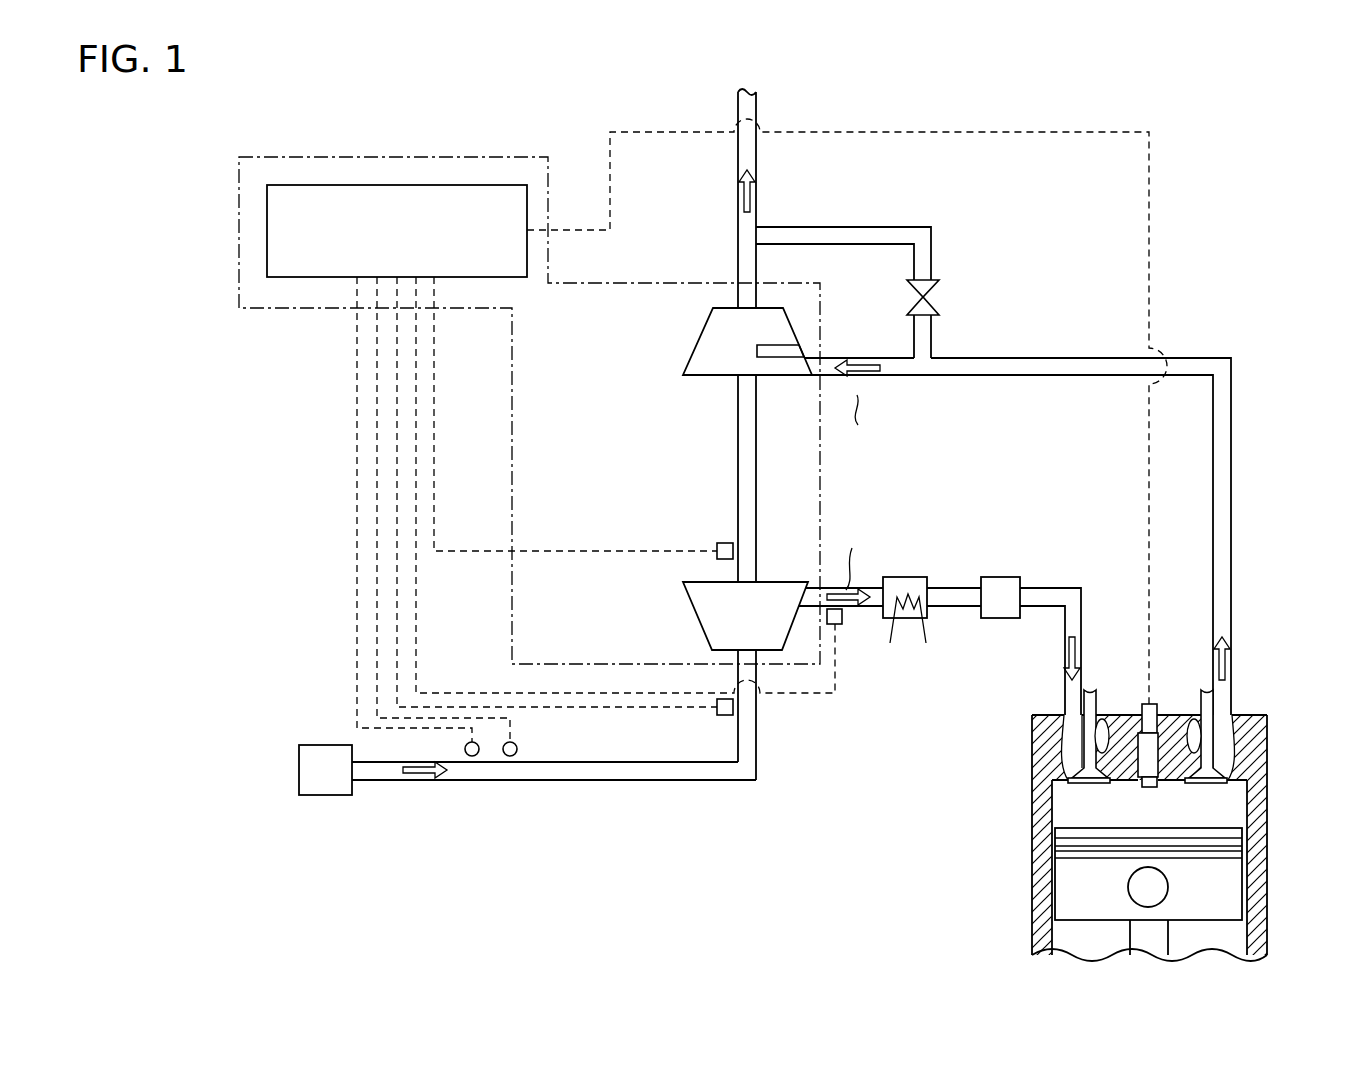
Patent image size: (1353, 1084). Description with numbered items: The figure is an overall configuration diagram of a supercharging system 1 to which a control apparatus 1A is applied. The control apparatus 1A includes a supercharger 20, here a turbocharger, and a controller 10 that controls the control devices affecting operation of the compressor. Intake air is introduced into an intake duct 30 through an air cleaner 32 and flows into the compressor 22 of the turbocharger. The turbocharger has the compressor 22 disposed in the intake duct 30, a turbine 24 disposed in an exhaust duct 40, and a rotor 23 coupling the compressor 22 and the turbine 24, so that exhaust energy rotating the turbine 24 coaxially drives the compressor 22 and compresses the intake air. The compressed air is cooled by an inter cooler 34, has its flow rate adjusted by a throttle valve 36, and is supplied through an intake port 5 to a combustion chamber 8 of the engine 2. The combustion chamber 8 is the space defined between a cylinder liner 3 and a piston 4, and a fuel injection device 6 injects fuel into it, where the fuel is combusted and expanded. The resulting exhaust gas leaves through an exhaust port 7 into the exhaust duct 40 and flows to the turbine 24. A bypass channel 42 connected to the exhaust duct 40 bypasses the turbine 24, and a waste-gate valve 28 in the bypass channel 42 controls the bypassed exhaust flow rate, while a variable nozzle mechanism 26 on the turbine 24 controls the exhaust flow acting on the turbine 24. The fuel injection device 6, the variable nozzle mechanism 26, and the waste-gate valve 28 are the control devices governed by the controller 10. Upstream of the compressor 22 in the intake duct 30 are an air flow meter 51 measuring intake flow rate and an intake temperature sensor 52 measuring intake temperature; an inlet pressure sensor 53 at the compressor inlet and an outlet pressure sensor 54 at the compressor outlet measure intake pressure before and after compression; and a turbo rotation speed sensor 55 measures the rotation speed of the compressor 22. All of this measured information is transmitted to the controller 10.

The supercharging system 1 is at (188, 135).
The control apparatus 1A is at (319, 156).
The controller 10 is at (450, 185).
The engine 2 is at (1177, 794).
The cylinder liner 3 is at (1247, 800).
The piston 4 is at (1223, 882).
The intake port 5 is at (1101, 727).
The fuel injection device 6 is at (1153, 704).
The exhaust port 7 is at (1194, 727).
The combustion chamber 8 is at (1158, 820).
The supercharger 20 is at (652, 466).
The compressor 22 is at (697, 626).
The rotor 23 is at (738, 452).
The turbine 24 is at (700, 341).
The variable nozzle mechanism 26 is at (776, 345).
The waste-gate valve 28 is at (939, 297).
The intake duct 30 is at (650, 781).
The air cleaner 32 is at (322, 795).
The inter cooler 34 is at (905, 577).
The throttle valve 36 is at (1003, 577).
The exhaust duct 40 is at (1232, 505).
The bypass channel 42 is at (874, 227).
The air flow meter 51 is at (518, 749).
The intake temperature sensor 52 is at (465, 749).
The inlet pressure sensor 53 is at (717, 713).
The outlet pressure sensor 54 is at (845, 624).
The turbo rotation speed sensor 55 is at (717, 547).